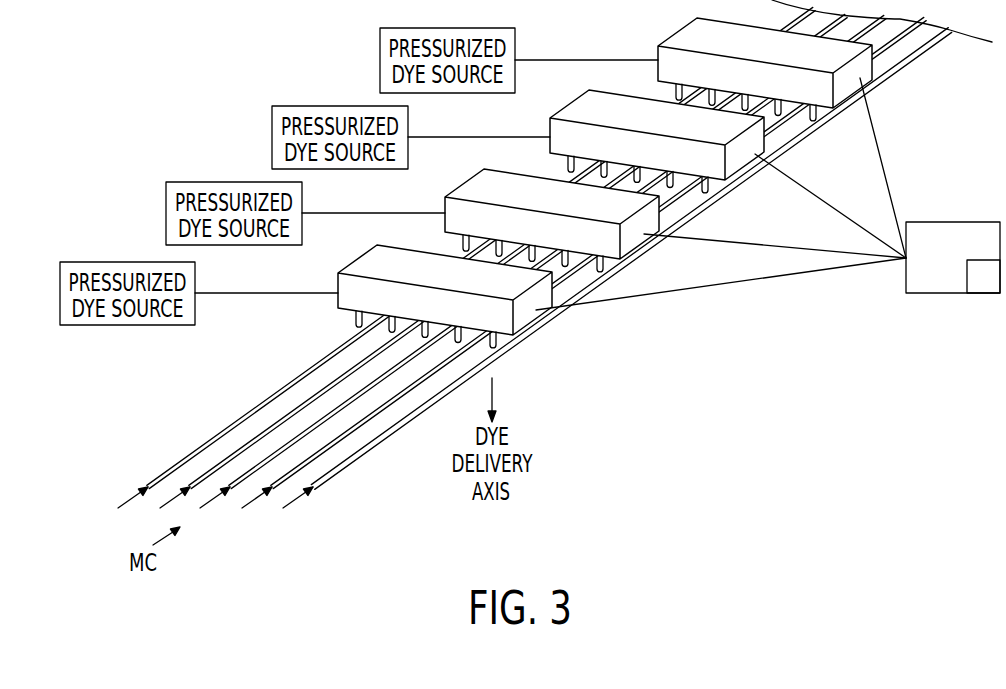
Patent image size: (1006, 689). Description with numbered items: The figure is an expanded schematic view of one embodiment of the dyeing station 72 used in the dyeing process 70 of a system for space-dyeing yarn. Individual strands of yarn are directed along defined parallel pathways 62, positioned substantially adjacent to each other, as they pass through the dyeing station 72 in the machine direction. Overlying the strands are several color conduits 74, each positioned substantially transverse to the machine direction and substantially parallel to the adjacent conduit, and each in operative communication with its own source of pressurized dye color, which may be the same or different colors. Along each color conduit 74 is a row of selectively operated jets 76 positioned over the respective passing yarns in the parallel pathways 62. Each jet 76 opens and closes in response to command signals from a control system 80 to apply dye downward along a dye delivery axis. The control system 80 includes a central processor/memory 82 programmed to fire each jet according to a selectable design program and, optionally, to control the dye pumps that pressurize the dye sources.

The defined parallel pathways 62 is at (323, 420).
The dyeing process 70 is at (763, 324).
The dyeing station 72 is at (661, 332).
The color conduit 74 is at (574, 176).
The selectively operated jets 76 is at (424, 339).
The control system 80 is at (945, 259).
The central processor/memory 82 is at (973, 288).